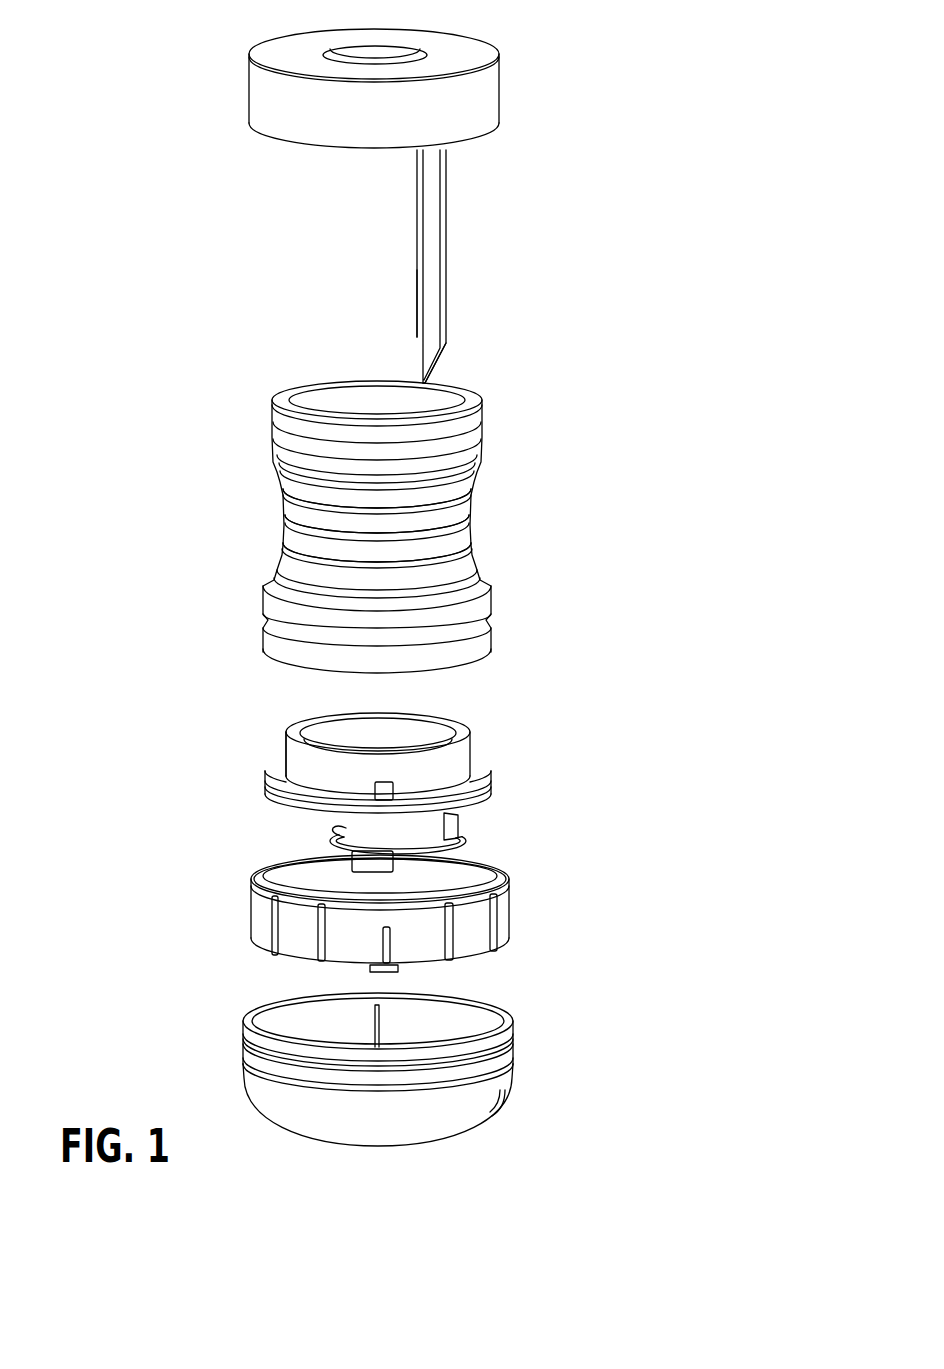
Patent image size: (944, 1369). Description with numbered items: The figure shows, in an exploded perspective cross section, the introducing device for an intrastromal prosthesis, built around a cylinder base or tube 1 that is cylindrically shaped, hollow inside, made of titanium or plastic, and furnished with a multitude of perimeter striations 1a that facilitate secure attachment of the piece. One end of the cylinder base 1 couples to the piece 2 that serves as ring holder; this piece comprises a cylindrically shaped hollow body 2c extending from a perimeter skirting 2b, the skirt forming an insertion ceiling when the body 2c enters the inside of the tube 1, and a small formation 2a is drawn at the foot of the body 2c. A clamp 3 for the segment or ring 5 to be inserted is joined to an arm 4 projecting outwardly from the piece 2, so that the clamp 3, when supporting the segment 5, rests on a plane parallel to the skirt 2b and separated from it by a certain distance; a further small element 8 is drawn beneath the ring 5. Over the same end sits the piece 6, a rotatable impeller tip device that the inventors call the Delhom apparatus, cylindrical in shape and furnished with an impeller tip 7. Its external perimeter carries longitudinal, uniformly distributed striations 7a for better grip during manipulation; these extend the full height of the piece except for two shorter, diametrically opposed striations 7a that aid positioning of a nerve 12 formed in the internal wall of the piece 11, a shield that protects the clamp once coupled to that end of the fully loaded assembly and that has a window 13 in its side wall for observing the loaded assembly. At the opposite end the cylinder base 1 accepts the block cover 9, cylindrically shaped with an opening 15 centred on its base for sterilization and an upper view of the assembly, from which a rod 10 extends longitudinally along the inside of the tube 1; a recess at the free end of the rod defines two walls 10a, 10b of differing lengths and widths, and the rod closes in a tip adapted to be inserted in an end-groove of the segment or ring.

The cylinder base or tube 1 is at (271, 521).
The bellows ribs 1a is at (473, 557).
The piece (ring holder) 2 is at (493, 754).
The tab of intermediate ring 2a is at (393, 783).
The perimeter skirting 2b is at (270, 778).
The cylinder shaped hollow body 2c is at (288, 740).
The clamp 3 is at (468, 848).
The arm 4 is at (458, 818).
The segment or ring 5 is at (330, 840).
The rotatable impeller tip device (Delhom apparatus) 6 is at (498, 920).
The impeller tip 7 is at (398, 967).
The striations 7a is at (300, 958).
The block member 8 is at (352, 860).
The block cover 9 is at (490, 128).
The rod 10 is at (425, 212).
The wall 10a is at (441, 352).
The wall 10b is at (417, 290).
The piece (clamp protector) 11 is at (395, 1135).
The nerve 12 is at (373, 1017).
The window 13 is at (512, 1103).
The opening 15 is at (365, 50).